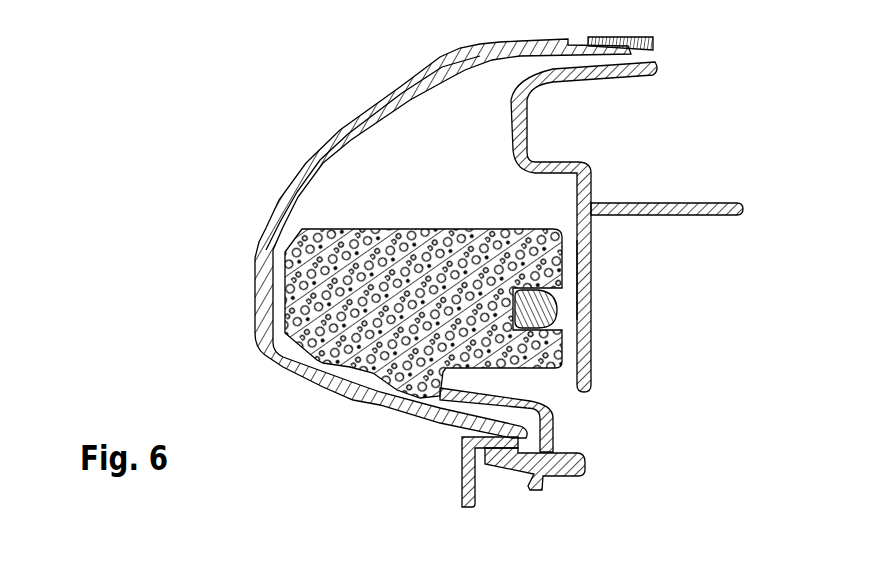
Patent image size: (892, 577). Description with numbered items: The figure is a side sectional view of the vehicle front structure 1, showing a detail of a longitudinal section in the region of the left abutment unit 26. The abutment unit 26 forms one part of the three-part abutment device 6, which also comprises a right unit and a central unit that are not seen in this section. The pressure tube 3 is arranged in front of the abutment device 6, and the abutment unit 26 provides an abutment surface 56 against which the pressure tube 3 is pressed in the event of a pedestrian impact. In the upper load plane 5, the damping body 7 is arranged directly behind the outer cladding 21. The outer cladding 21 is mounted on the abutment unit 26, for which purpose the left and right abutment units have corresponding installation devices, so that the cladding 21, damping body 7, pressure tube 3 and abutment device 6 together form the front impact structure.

The roof arrangement 1 is at (160, 71).
The upper load plane 5 is at (200, 216).
The outer cladding 21 is at (348, 133).
The damping body 7 is at (373, 258).
The abutment surface 56 is at (572, 274).
The abutment device 6 is at (598, 158).
The left abutment unit 26 is at (693, 203).
The pressure tube 3 is at (542, 306).